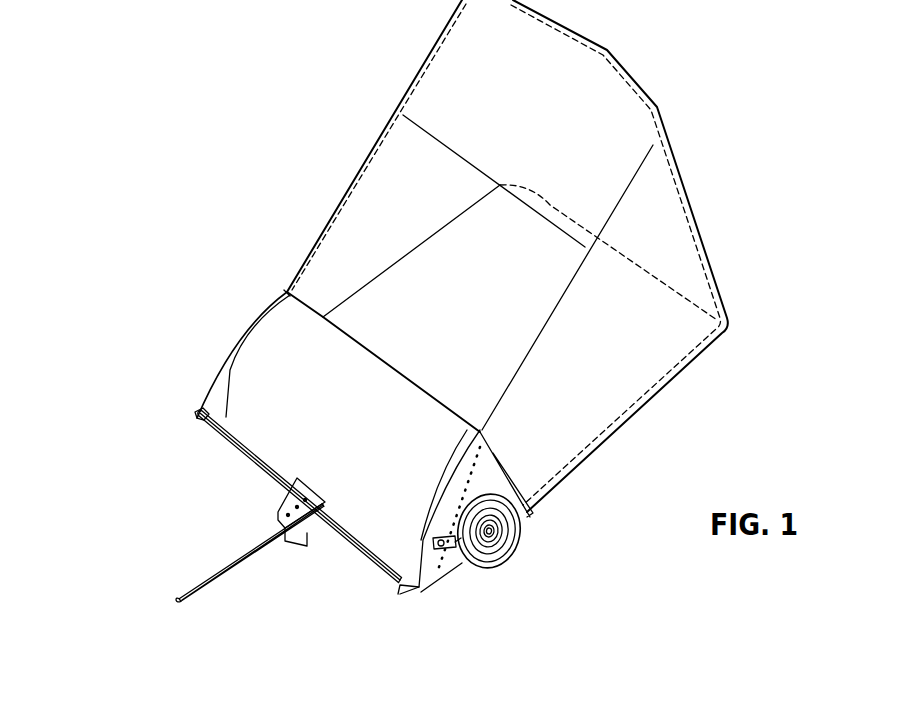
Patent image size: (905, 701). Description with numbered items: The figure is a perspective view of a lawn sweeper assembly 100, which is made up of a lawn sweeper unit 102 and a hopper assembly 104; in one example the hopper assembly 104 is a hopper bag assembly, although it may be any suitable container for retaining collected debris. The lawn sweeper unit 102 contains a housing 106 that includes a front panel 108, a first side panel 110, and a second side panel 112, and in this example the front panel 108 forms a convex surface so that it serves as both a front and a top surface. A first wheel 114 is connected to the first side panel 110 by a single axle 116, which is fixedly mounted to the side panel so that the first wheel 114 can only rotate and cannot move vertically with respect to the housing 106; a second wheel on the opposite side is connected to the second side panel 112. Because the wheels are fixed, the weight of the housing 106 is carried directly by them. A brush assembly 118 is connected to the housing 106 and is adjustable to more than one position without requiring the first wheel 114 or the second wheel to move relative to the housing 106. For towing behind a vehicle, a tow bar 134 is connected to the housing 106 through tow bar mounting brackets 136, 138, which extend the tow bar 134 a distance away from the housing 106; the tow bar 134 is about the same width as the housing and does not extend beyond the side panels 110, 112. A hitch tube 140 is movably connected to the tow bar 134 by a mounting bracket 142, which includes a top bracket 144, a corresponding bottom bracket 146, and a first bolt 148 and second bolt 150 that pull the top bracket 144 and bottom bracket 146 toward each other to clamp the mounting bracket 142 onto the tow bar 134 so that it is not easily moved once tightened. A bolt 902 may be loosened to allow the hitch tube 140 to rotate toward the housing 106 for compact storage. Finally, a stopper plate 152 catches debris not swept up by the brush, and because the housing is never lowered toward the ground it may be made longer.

The lawn sweeper assembly 100 is at (167, 93).
The lawn sweeper unit 102 is at (235, 317).
The hopper assembly 104 is at (342, 155).
The housing 106 is at (250, 352).
The front panel 108 is at (245, 385).
The first side panel 110 is at (430, 573).
The second side panel 112 is at (273, 300).
The first wheel 114 is at (495, 563).
The axle 116 is at (492, 532).
The brush assembly 118 is at (450, 555).
The tow bar 134 is at (232, 440).
The tow bar mounting bracket 136 is at (405, 583).
The tow bar mounting bracket 138 is at (215, 402).
The hitch tube 140 is at (187, 602).
The mounting bracket 142 is at (275, 557).
The top bracket 144 is at (283, 503).
The bottom bracket 146 is at (323, 537).
The first bolt 148 is at (307, 498).
The second bolt 150 is at (314, 530).
The stopper plate 152 is at (537, 517).
The bolt 902 is at (285, 510).